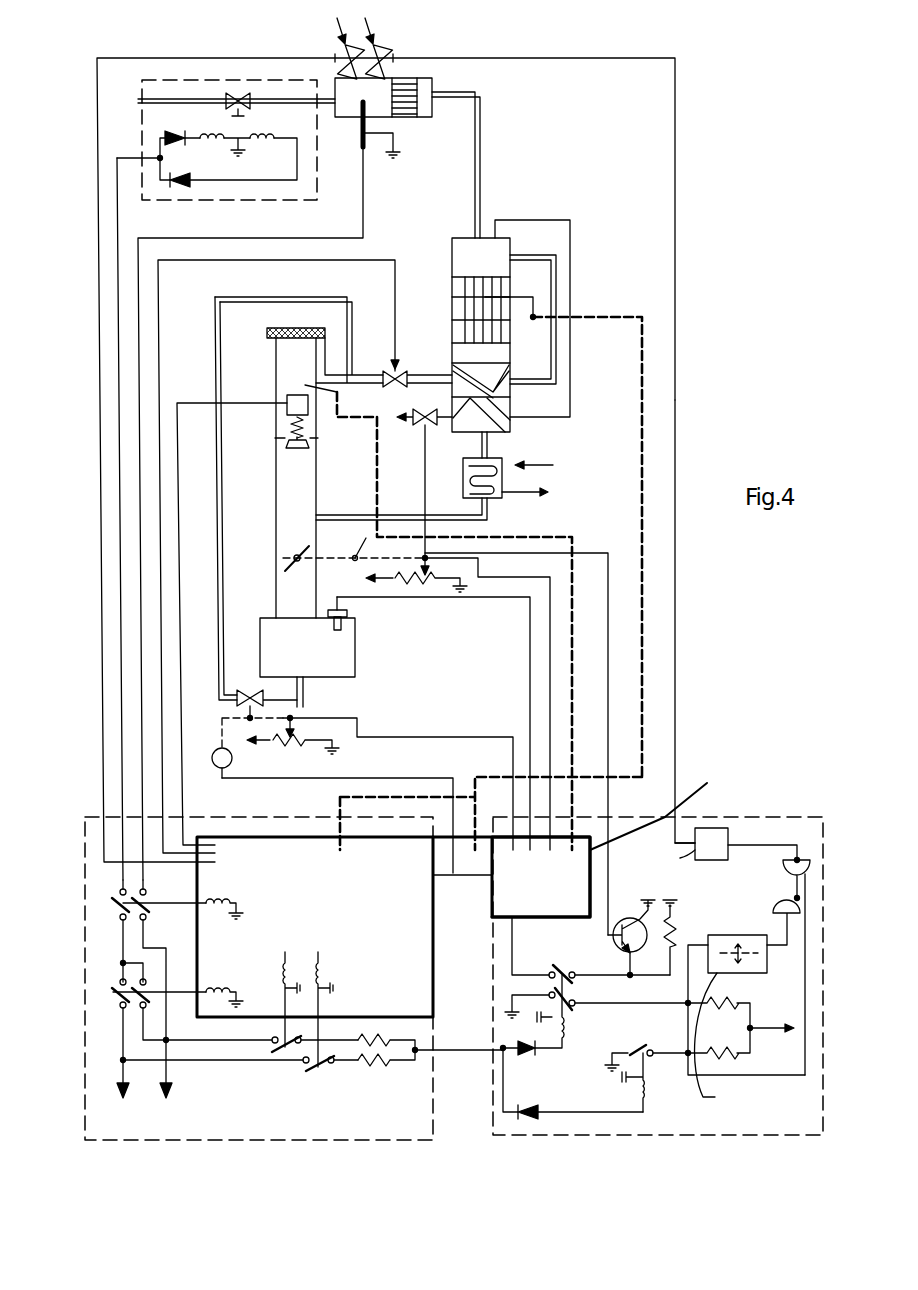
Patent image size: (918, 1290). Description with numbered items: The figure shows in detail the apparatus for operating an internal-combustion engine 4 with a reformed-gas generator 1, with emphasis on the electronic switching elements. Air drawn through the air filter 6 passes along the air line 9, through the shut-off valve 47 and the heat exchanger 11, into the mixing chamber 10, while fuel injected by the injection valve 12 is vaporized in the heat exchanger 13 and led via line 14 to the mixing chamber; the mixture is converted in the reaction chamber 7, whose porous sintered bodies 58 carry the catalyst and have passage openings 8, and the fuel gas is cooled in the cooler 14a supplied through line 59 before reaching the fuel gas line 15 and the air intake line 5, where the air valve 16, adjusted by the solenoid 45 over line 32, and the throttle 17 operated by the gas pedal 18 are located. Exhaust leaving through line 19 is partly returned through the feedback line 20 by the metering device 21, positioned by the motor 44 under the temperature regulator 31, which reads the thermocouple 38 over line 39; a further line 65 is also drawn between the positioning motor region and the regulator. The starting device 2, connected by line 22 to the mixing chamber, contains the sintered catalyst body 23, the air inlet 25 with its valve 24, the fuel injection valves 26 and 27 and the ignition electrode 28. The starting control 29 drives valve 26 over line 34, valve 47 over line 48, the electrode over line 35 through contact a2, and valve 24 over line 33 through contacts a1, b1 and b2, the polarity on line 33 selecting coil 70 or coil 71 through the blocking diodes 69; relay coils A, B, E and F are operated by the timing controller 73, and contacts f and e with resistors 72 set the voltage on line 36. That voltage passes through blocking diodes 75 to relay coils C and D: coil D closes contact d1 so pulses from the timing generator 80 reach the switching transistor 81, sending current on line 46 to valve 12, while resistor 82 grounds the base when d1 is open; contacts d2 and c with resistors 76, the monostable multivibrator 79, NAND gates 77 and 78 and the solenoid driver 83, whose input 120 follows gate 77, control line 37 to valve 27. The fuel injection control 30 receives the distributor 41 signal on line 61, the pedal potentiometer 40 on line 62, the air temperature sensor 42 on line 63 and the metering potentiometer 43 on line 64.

The reformed-gas generator 1 is at (452, 238).
The starting device 2 is at (432, 92).
The internal-combustion engine 4 is at (362, 658).
The air intake line 5 is at (276, 502).
The air filter 6 is at (267, 334).
The reaction chamber 7 is at (452, 306).
The passage openings 8 is at (492, 277).
The air line 9 is at (551, 258).
The mixing chamber 10 is at (452, 257).
The heat exchanger 11 is at (505, 380).
The injection valve 12 is at (421, 424).
The heat exchanger 13 is at (505, 412).
The line 14 is at (533, 220).
The cooler 14a is at (463, 477).
The fuel gas line 15 is at (352, 516).
The air valve 16 is at (292, 452).
The throttle 17 is at (295, 548).
The gas pedal 18 is at (364, 550).
The line 19 is at (308, 700).
The feedback line 20 is at (216, 647).
The metering device 21 is at (248, 690).
The line 22 is at (478, 138).
The sintered body 23 is at (408, 118).
The valve 24 is at (308, 203).
The air inlet 25 is at (147, 101).
The fuel injection valve 26 is at (343, 47).
The fuel injection valve 27 is at (381, 47).
The ignition electrode 28 is at (361, 130).
The starting control 29 is at (90, 811).
The fuel injection control 30 is at (808, 818).
The temperature regulator 31 is at (462, 877).
The line 32 is at (179, 444).
The line 33 is at (119, 334).
The line 34 is at (99, 300).
The line 35 is at (140, 368).
The line 36 is at (462, 1047).
The line 37 is at (678, 620).
The temperature sensor 38 is at (533, 297).
The line 39 is at (645, 692).
The potentiometer 40 is at (408, 588).
The distributor 41 is at (352, 613).
The temperature sensor 42 is at (438, 617).
The potentiometer 43 is at (286, 745).
The positioning motor 44 is at (213, 764).
The solenoid 45 is at (287, 400).
The line 46 is at (608, 713).
The shut-off valve 47 is at (403, 380).
The line 48 is at (160, 410).
The sintered bodies 58 is at (455, 295).
The line 59 is at (547, 465).
The line 61 is at (530, 620).
The line 62 is at (550, 648).
The line 63 is at (570, 668).
The line 64 is at (481, 739).
The signal line 65 is at (423, 796).
The blocking diodes 69 is at (183, 185).
The energizing coil 70 is at (226, 150).
The energizing coil 71 is at (280, 150).
The resistors 72 is at (378, 1062).
The controller 73 is at (393, 927).
The blocking diodes 75 is at (518, 1104).
The resistors 76 is at (749, 1029).
The NAND gate 77 is at (783, 865).
The NAND gate 78 is at (780, 900).
The monostable multivibrator 79 is at (708, 935).
The timing generator 80 is at (588, 852).
The switching transistor 81 is at (618, 918).
The resistor 82 is at (676, 914).
The solenoid driver 83 is at (728, 834).
The input 120 is at (773, 846).
The relay contact a1 is at (112, 898).
The relay contact a2 is at (143, 898).
The relay contact b1 is at (148, 1000).
The relay contact b2 is at (113, 998).
The relay coil A is at (224, 892).
The relay coil B is at (224, 978).
The relay coil F is at (282, 968).
The relay coil E is at (316, 968).
The contact f is at (274, 1052).
The contact e is at (313, 1070).
The contact d1 is at (576, 970).
The contact d2 is at (576, 995).
The relay coil D is at (563, 1011).
The contact c is at (645, 1045).
The relay coil C is at (645, 1082).